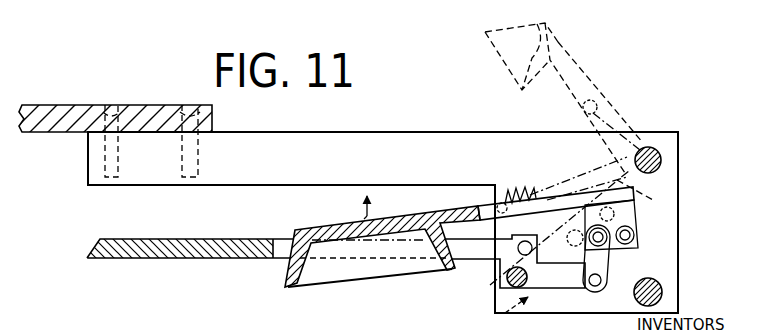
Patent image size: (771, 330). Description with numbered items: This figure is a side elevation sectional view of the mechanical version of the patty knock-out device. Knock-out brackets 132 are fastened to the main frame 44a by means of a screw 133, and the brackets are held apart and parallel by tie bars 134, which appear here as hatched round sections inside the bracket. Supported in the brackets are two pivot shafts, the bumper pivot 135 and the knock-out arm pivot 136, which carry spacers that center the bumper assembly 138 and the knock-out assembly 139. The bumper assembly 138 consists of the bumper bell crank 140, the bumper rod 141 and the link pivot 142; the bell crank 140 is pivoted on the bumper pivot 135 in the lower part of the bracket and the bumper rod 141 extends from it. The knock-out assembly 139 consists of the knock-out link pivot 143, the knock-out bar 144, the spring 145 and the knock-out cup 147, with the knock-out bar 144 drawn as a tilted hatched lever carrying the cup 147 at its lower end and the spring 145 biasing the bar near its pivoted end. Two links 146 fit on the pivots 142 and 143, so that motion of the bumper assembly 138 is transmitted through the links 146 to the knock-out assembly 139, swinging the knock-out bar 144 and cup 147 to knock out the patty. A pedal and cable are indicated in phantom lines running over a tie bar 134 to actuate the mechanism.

The main frame 44a is at (60, 108).
The screw 133 is at (192, 107).
The knock-out bracket 132 is at (297, 168).
The bumper assembly 138 is at (500, 313).
The knock-out bar 144 is at (323, 230).
The knock-out cup 147 is at (293, 290).
The knock-out assembly 139 is at (439, 205).
The spring 145 is at (526, 187).
The bumper rod 141 is at (562, 248).
The knock-out link pivot 143 is at (608, 245).
The knock-out arm pivot 136 is at (636, 238).
The link 146 is at (608, 276).
The link pivot 142 is at (599, 288).
The bumper bell crank 140 is at (555, 288).
The bumper pivot 135 is at (506, 287).
The tie bar 134 is at (661, 155).